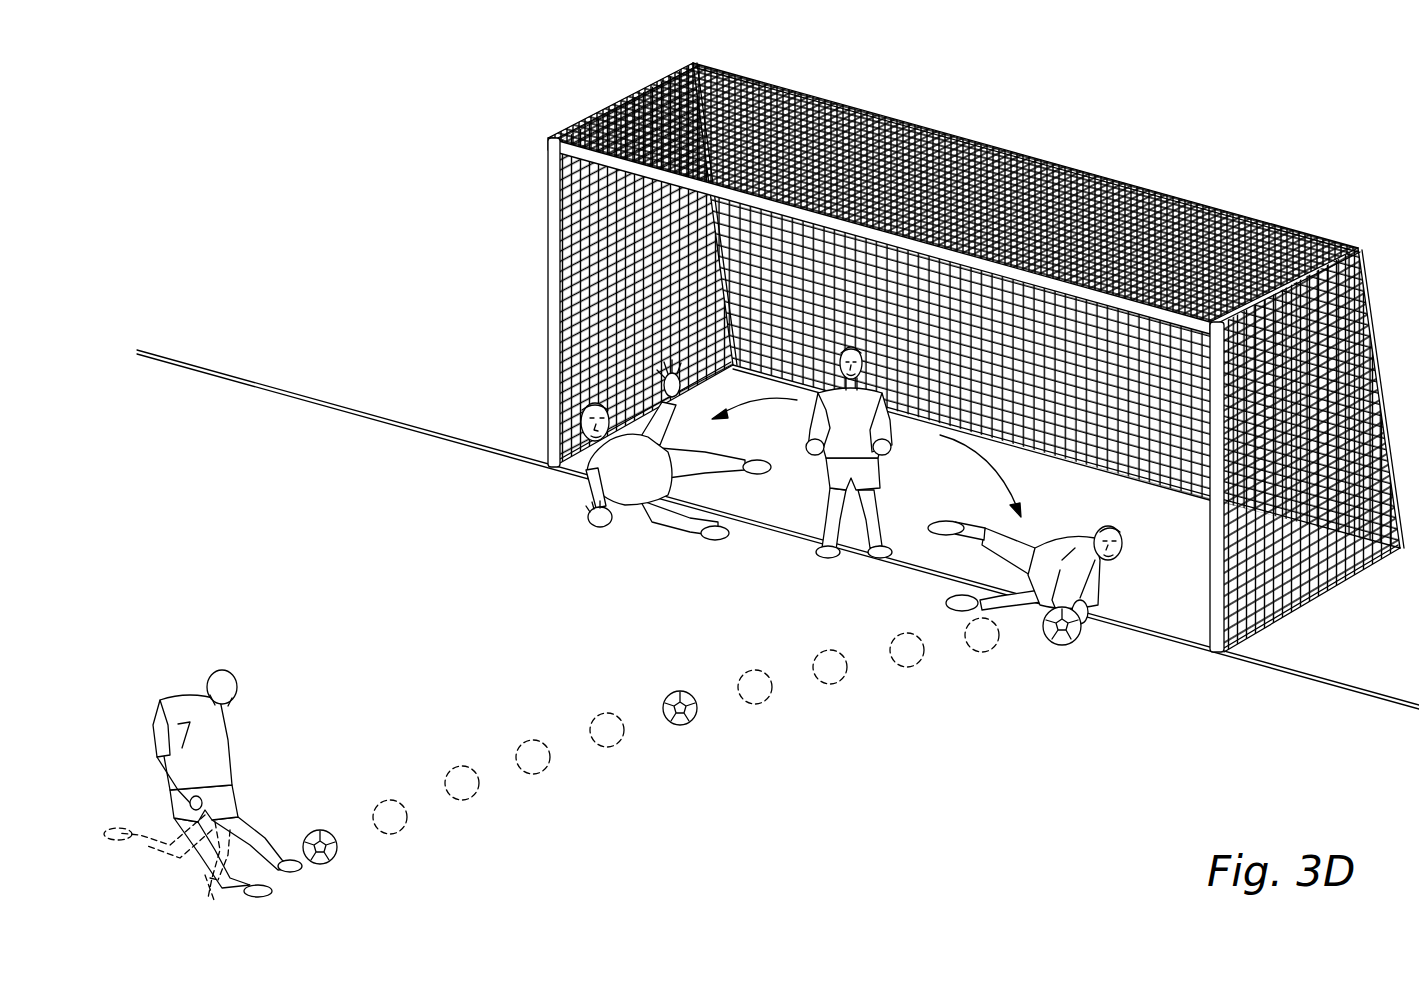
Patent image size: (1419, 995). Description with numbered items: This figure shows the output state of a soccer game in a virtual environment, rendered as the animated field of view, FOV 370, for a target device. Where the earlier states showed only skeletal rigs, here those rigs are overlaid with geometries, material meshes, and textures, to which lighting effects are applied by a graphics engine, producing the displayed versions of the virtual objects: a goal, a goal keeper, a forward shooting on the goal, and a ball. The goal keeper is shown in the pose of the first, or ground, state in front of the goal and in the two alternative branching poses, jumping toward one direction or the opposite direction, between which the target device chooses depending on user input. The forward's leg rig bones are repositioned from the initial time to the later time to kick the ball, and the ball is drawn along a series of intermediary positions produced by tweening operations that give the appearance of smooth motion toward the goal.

The FOV 370 is at (296, 214).